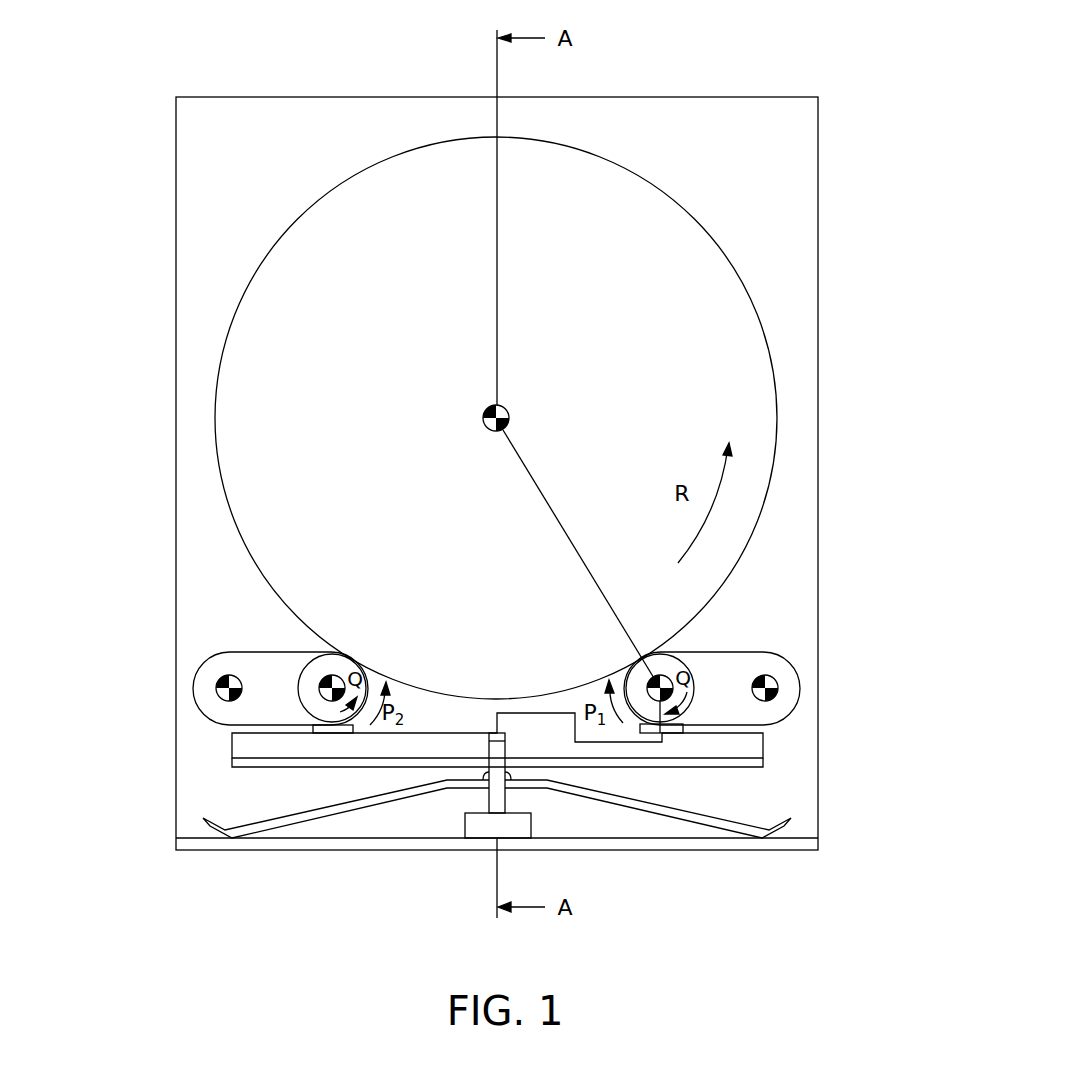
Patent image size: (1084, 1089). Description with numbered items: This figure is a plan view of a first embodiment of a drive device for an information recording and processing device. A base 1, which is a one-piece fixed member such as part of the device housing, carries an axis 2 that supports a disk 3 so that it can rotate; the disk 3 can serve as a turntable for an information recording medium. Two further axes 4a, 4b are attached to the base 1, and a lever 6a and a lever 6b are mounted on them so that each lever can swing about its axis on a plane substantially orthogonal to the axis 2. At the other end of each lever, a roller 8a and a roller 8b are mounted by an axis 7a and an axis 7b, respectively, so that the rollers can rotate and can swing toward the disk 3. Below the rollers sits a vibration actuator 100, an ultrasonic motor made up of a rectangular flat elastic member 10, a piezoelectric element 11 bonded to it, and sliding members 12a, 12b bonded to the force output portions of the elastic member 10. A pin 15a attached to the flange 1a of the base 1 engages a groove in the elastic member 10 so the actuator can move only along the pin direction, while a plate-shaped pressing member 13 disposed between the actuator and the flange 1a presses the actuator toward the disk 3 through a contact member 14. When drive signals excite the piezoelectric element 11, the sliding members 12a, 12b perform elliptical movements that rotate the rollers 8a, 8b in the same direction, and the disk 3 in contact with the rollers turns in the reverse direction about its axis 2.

The base 1 is at (777, 185).
The flange 1a is at (795, 843).
The axis 2 is at (509, 414).
The disk 3 is at (742, 397).
The axis 4a is at (778, 686).
The axis 4b is at (229, 694).
The lever 6a is at (780, 668).
The lever 6b is at (203, 685).
The axis 7a is at (695, 655).
The axis 7b is at (318, 678).
The roller 8a is at (665, 662).
The roller 8b is at (328, 658).
The elastic member 10 is at (743, 742).
The piezoelectric element 11 is at (717, 760).
The sliding member 12a is at (672, 731).
The sliding member 12b is at (330, 730).
The pressing member 13 is at (425, 787).
The contact member 14 is at (505, 770).
The pin 15a is at (482, 830).
The vibration actuator 100 is at (907, 737).